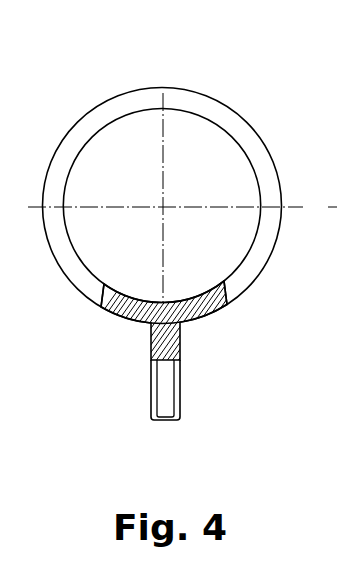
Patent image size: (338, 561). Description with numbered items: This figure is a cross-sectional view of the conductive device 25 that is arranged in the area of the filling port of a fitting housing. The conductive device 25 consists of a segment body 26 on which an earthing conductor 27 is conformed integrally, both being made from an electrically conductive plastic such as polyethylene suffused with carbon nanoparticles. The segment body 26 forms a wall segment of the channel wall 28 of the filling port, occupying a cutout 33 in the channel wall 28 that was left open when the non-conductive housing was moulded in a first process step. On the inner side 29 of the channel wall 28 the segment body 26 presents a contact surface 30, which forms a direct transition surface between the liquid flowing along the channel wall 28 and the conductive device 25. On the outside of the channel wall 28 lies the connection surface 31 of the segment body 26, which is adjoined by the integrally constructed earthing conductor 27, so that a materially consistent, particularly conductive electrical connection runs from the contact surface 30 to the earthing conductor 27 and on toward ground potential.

The conductive device 25 is at (179, 323).
The segment body 26 is at (141, 300).
The earthing conductor 27 is at (181, 392).
The channel wall 28 is at (232, 110).
The inner side of channel wall 29 is at (233, 133).
The contact surface 30 is at (187, 298).
The connection surface 31 is at (207, 316).
The cutout 33 is at (121, 317).